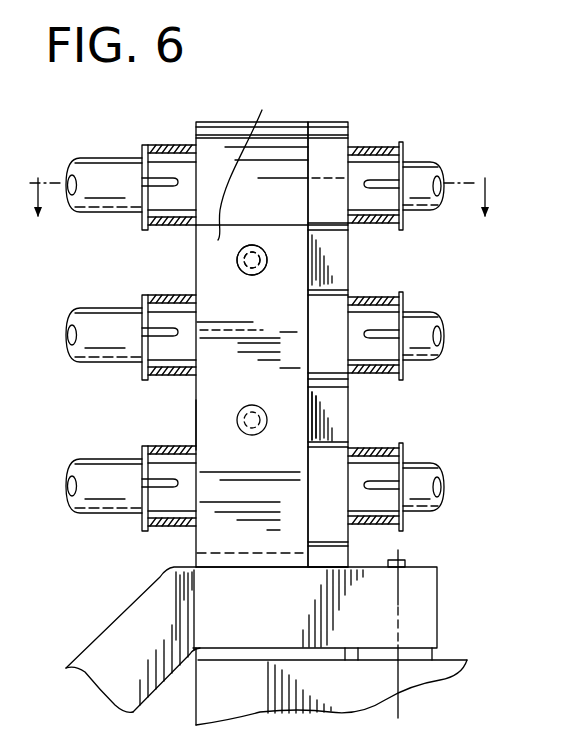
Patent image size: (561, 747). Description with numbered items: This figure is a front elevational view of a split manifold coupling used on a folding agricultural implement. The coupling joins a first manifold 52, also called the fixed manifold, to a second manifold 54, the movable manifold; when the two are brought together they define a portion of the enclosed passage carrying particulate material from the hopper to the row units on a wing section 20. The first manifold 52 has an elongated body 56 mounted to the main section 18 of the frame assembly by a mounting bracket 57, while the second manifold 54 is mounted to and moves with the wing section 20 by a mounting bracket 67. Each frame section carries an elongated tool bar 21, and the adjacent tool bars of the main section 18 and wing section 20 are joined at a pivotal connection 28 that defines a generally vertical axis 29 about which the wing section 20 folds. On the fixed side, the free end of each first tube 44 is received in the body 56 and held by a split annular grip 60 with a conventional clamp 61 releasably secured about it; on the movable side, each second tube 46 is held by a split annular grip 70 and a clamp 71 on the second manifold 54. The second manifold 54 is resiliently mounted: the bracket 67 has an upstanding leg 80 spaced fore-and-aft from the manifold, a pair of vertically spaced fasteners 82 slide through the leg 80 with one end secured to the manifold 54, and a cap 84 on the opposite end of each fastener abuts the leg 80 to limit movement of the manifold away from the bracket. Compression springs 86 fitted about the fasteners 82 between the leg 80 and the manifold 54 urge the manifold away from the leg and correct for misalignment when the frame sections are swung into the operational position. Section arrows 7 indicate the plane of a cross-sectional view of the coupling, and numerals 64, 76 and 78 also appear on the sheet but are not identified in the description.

The section line 7- 7 is at (260, 186).
The main section 18 is at (306, 716).
The wing section 20 is at (90, 634).
The tool bar 21 is at (432, 609).
The pivotal connection 28 is at (408, 563).
The vertical axis 29 is at (398, 705).
The first tube 44 is at (420, 165).
The second tube 46 is at (78, 170).
The first manifold 52 is at (332, 120).
The second manifold 54 is at (200, 128).
The elongated body 56 is at (336, 410).
The mounting bracket 57 is at (325, 572).
The split annular grip 60 is at (368, 298).
The clamp 61 is at (375, 148).
The member 64 is at (240, 740).
The mounting bracket 67 is at (194, 425).
The split annular grip 70 is at (150, 218).
The clamp 71 is at (178, 228).
The member 76 is at (44, 736).
The member 78 is at (85, 736).
The upstanding leg 80 is at (249, 160).
The fasteners 82 is at (243, 263).
The cap 84 is at (260, 270).
The compression springs 86 is at (268, 248).